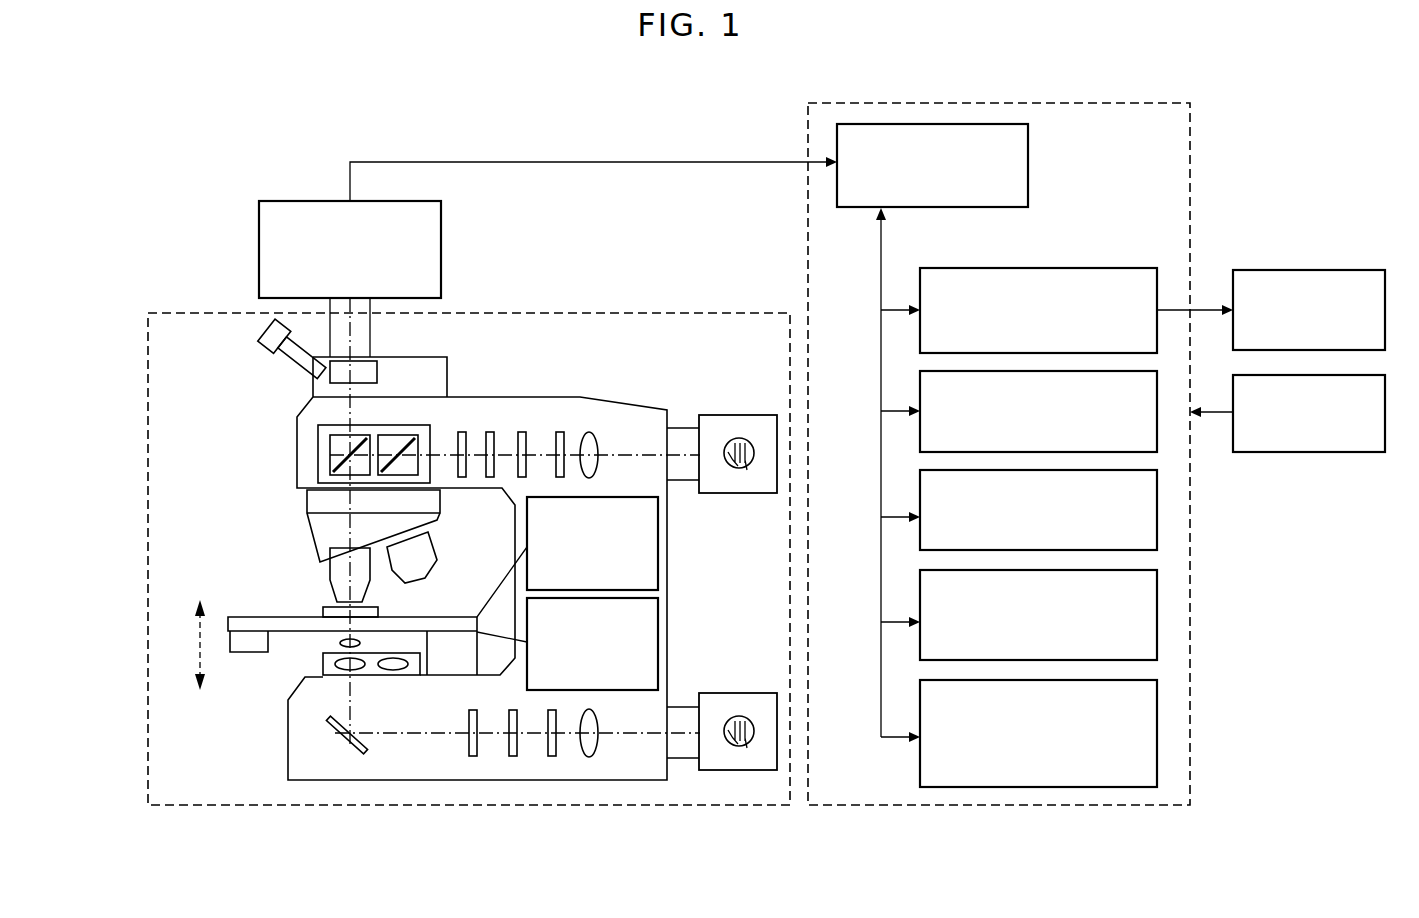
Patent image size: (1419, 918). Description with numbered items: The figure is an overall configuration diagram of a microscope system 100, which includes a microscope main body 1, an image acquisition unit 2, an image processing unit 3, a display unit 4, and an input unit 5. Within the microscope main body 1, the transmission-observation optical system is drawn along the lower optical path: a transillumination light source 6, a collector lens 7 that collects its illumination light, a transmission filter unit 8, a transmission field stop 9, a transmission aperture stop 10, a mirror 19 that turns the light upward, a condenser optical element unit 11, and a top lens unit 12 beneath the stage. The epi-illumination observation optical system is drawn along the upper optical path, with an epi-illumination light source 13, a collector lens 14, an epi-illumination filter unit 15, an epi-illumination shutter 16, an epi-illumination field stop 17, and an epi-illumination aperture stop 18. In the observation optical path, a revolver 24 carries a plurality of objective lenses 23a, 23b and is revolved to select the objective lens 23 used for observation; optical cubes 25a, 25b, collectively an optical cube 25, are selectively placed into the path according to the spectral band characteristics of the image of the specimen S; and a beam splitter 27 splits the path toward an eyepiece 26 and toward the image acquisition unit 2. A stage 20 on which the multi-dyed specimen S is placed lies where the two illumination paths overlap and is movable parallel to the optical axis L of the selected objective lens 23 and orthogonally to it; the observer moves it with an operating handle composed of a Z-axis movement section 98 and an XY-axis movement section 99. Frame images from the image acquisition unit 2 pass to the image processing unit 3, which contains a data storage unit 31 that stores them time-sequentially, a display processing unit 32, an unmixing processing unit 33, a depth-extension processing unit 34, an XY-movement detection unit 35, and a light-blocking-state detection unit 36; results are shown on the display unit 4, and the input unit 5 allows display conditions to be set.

The microscope system 100 is at (383, 128).
The microscope main body 1 is at (204, 312).
The image acquisition unit 2 is at (443, 248).
The image processing unit 3 is at (904, 101).
The data storage unit 31 is at (1030, 152).
The display processing unit 32 is at (1098, 266).
The unmixing processing unit 33 is at (1157, 428).
The depth-extension processing unit 34 is at (1157, 507).
The XY-movement detection unit 35 is at (1157, 605).
The light-blocking-state detection unit 36 is at (1157, 703).
The display unit 4 is at (1304, 268).
The input unit 5 is at (1312, 455).
The transillumination light source 6 is at (737, 772).
The collector lens 7 is at (589, 758).
The transmission filter unit 8 is at (552, 758).
The transmission field stop 9 is at (513, 758).
The transmission aperture stop 10 is at (473, 758).
The condenser optical element unit 11 is at (320, 663).
The top lens unit 12 is at (338, 644).
The epi-illumination light source 13 is at (736, 413).
The collector lens 14 is at (590, 430).
The epi-illumination filter unit 15 is at (560, 430).
The epi-illumination shutter 16 is at (522, 430).
The epi-illumination field stop 17 is at (490, 430).
The epi-illumination aperture stop 18 is at (462, 430).
The mirror 19 is at (356, 754).
The stage 20 is at (455, 615).
The objective lens 23 is at (240, 532).
The objective lens 23a is at (327, 573).
The objective lens 23b is at (373, 553).
The revolver 24 is at (310, 527).
The optical cube 25 is at (232, 428).
The optical cube 25a is at (332, 461).
The optical cube 25b is at (387, 416).
The eyepiece 26 is at (260, 345).
The beam splitter 27 is at (378, 372).
The Z-axis movement section 98 is at (658, 541).
The XY-axis movement section 99 is at (658, 644).
The optical axis L is at (325, 586).
The specimen S is at (380, 613).